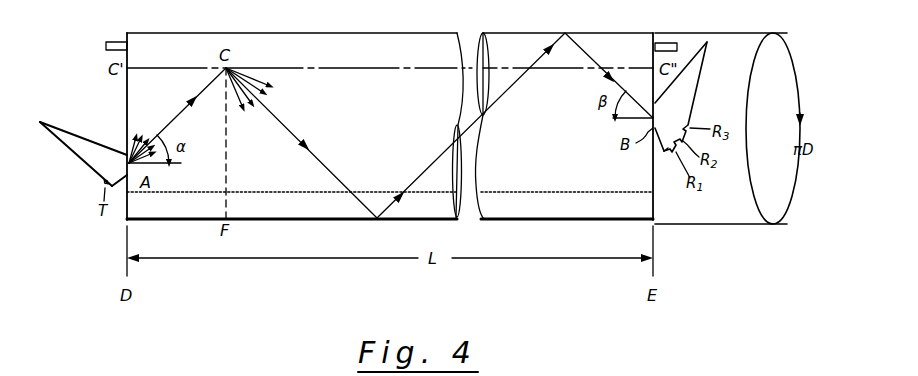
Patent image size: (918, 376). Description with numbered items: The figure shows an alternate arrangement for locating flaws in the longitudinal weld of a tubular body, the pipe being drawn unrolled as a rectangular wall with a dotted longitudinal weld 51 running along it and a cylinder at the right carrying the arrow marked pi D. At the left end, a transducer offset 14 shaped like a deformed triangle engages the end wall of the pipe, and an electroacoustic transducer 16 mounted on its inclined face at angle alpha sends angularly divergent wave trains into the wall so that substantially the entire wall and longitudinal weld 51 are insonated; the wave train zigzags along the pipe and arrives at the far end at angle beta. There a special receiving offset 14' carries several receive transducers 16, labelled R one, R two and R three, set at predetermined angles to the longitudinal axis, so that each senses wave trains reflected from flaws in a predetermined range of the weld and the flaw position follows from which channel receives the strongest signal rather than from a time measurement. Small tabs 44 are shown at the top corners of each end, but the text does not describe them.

The offset 14 is at (83, 157).
The receiving offset 14' is at (700, 97).
The electroacoustic transducer 16 is at (104, 183).
The mounting tab 44 is at (115, 42).
The longitudinal weld 51 is at (580, 192).